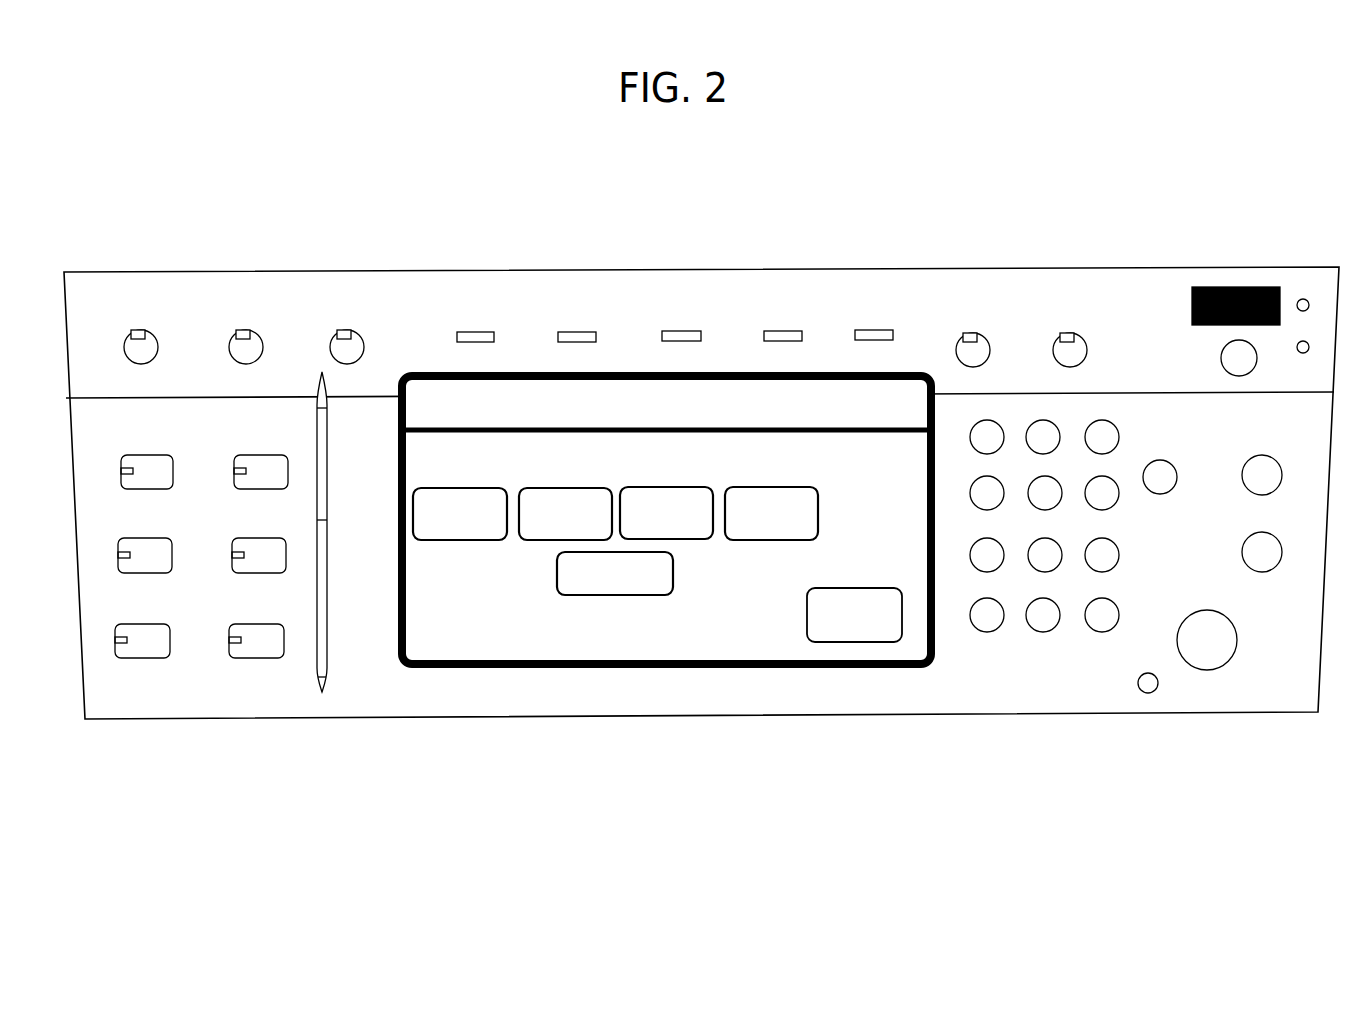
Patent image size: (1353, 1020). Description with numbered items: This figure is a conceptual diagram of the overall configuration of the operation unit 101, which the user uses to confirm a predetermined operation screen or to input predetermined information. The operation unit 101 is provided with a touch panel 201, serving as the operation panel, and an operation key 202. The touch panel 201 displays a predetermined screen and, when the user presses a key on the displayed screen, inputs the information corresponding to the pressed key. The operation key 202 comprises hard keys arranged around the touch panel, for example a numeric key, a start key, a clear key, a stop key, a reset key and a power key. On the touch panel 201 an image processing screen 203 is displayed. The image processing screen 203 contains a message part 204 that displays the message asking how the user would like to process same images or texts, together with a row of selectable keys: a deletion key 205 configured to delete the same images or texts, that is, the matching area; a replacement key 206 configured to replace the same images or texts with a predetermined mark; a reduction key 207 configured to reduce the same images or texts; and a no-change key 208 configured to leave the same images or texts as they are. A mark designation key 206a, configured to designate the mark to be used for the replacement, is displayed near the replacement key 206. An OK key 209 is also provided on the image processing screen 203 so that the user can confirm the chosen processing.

The operation unit 101 is at (706, 736).
The touch panel 201 is at (503, 712).
The operation key 202 is at (942, 745).
The image processing screen 203 is at (627, 360).
The message part 204 is at (600, 443).
The deletion key 205 is at (445, 533).
The replacement key 206 is at (550, 533).
The mark designation key 206a is at (557, 577).
The reduction key 207 is at (693, 537).
The no-change key 208 is at (772, 537).
The OK key 209 is at (852, 600).